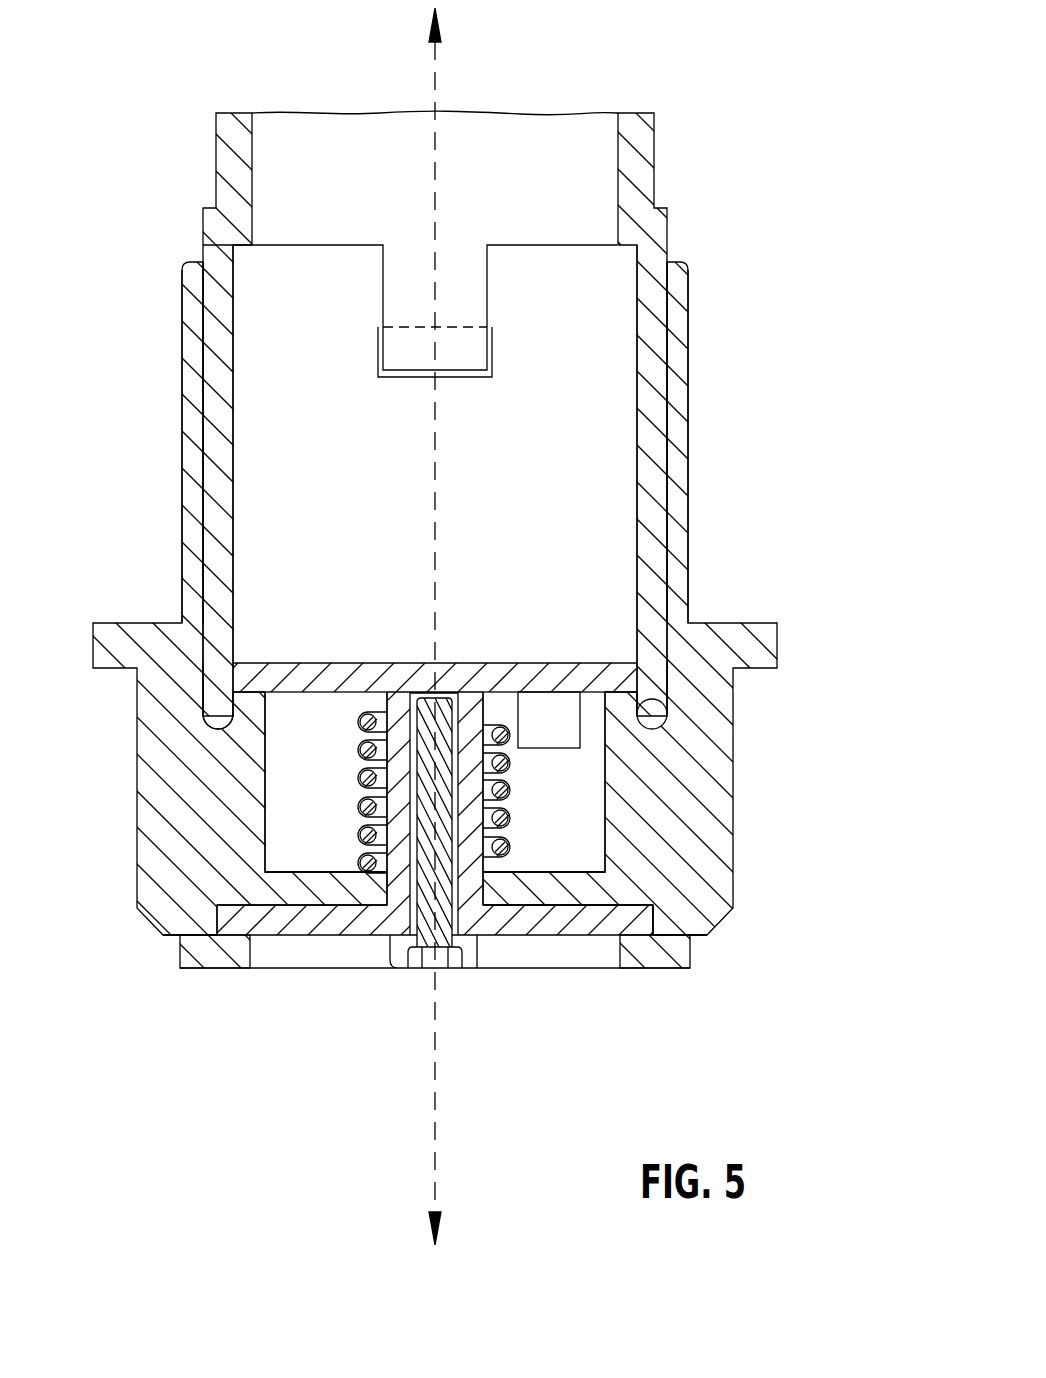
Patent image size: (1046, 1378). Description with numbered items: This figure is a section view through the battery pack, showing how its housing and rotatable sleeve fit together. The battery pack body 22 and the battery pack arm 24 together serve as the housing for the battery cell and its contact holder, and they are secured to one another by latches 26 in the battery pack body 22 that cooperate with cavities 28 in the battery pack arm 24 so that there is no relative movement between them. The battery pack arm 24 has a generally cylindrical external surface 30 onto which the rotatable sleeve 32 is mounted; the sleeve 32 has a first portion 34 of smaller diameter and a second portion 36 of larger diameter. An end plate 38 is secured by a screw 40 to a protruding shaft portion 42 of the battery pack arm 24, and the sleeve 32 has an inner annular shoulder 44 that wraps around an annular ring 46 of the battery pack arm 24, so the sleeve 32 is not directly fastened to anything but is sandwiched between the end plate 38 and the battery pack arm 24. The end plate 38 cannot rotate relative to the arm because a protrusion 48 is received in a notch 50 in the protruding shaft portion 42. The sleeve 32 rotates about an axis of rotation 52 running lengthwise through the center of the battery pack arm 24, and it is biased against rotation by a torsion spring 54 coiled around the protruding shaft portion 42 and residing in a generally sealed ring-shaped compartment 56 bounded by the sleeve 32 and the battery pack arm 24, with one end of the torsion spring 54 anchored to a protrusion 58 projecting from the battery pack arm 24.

The battery pack body 22 is at (516, 150).
The battery pack arm 24 is at (578, 537).
The latches 26 is at (455, 296).
The cavities 28 is at (400, 378).
The cylindrical external surface 30 is at (680, 410).
The sleeve 32 is at (607, 890).
The first portion 34 is at (195, 468).
The second portion 36 is at (690, 777).
The end plate 38 is at (310, 918).
The screw 40 is at (400, 948).
The protruding shaft portion 42 is at (398, 887).
The inner annular shoulder 44 is at (617, 706).
The annular ring 46 is at (215, 718).
The protrusion 48 is at (468, 915).
The notch 50 is at (463, 938).
The axis of rotation 52 is at (433, 1143).
The torsion spring 54 is at (365, 833).
The ring-shaped compartment 56 is at (288, 808).
The protrusion 58 is at (548, 732).